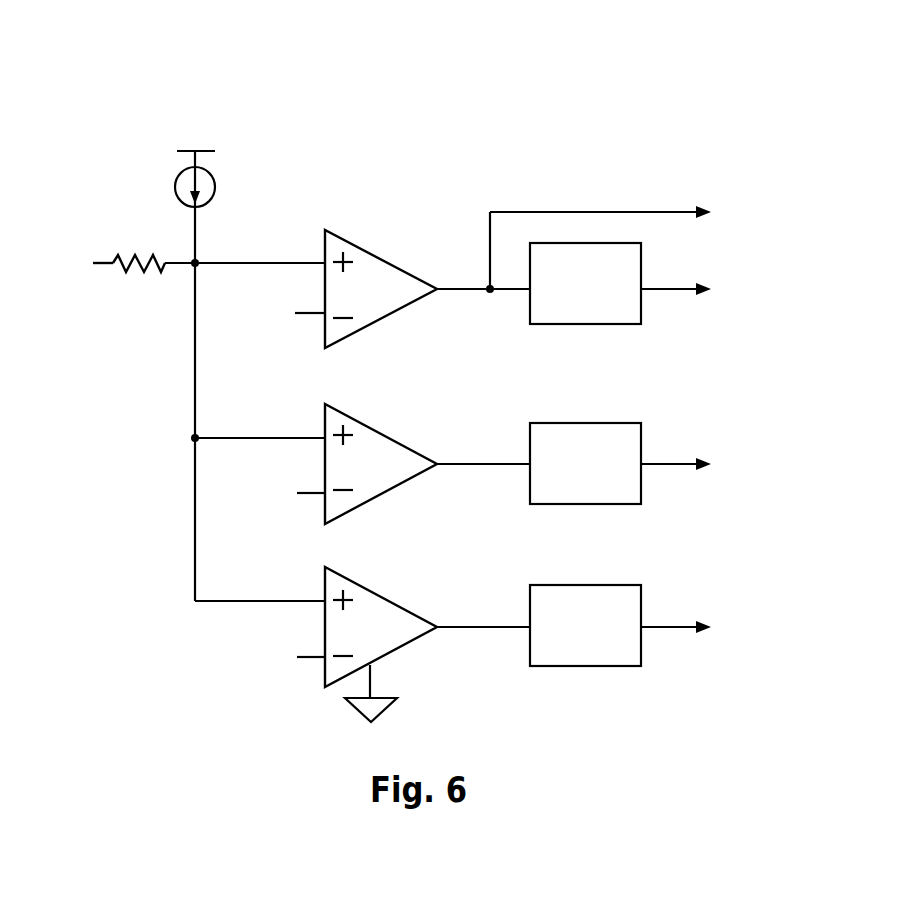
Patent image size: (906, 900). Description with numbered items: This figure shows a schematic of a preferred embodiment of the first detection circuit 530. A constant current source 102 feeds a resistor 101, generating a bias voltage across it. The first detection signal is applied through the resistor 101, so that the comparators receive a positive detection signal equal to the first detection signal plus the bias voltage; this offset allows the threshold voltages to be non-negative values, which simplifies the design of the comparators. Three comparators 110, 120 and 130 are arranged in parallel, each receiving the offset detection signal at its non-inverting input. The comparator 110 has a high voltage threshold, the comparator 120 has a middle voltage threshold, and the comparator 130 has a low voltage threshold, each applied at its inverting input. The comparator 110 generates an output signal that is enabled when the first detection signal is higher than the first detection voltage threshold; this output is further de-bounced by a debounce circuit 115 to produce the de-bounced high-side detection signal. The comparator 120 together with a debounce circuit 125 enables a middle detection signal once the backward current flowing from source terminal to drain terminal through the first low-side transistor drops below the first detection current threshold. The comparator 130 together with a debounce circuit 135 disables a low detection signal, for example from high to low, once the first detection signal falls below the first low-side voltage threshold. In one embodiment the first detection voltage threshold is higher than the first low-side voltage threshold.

The comparator circuit 530 is at (197, 47).
The resistor 101 is at (139, 282).
The constant current source 102 is at (218, 190).
The comparator 110 is at (389, 297).
The comparator 120 is at (389, 472).
The comparator 130 is at (389, 635).
The debounce circuit 115 is at (605, 312).
The debounce circuit 125 is at (605, 492).
The debounce circuit 135 is at (605, 654).